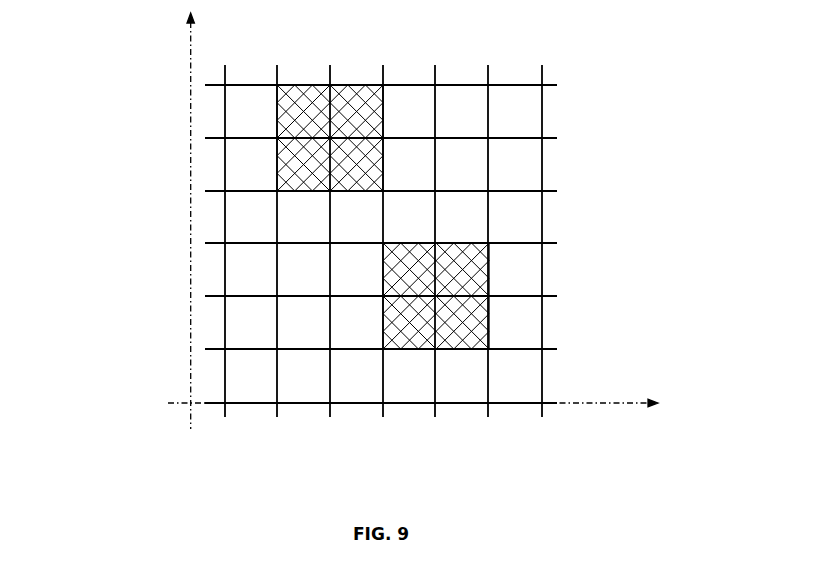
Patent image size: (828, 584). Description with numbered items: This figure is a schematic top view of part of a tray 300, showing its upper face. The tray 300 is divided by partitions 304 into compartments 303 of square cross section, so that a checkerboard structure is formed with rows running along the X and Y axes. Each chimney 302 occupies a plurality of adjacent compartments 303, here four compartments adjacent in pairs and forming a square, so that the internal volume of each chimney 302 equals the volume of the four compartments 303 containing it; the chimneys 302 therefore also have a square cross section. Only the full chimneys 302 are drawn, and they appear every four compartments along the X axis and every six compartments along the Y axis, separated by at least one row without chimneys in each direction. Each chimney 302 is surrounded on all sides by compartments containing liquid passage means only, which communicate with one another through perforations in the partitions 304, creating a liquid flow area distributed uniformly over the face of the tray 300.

The tray 300 is at (184, 423).
The chimney 302 is at (455, 308).
The compartment 303 is at (245, 170).
The partition 304 is at (522, 190).